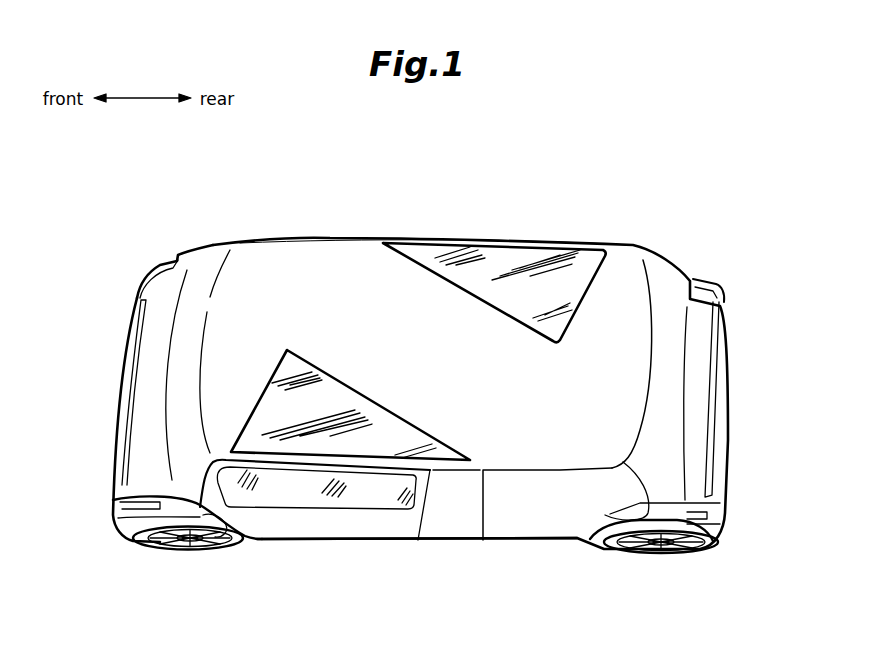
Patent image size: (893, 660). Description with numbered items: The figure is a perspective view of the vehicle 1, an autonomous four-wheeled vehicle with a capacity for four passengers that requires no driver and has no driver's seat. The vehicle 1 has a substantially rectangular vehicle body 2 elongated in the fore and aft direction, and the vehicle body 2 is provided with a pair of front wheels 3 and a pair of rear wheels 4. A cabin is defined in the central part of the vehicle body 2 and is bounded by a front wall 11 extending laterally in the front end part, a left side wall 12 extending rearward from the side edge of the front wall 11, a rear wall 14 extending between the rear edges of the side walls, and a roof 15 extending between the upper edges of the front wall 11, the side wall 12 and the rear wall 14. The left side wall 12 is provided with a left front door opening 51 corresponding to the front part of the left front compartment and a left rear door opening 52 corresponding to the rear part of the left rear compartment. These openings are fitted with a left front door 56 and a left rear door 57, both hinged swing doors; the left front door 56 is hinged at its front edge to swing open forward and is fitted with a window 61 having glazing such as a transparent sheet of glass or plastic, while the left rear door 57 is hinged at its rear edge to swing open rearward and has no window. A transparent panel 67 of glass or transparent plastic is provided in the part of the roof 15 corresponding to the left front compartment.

The vehicle 1 is at (585, 176).
The vehicle body 2 is at (148, 444).
The front wheels 3 is at (160, 547).
The rear wheels 4 is at (694, 551).
The front wall 11 is at (181, 345).
The left side wall 12 is at (447, 518).
The rear wall 14 is at (685, 383).
The roof 15 is at (322, 274).
The left front door opening 51 is at (217, 548).
The left rear door opening 52 is at (623, 480).
The left front door 56 is at (343, 527).
The left rear door 57 is at (521, 518).
The side window 61 is at (282, 490).
The transparent panel 67 is at (506, 260).